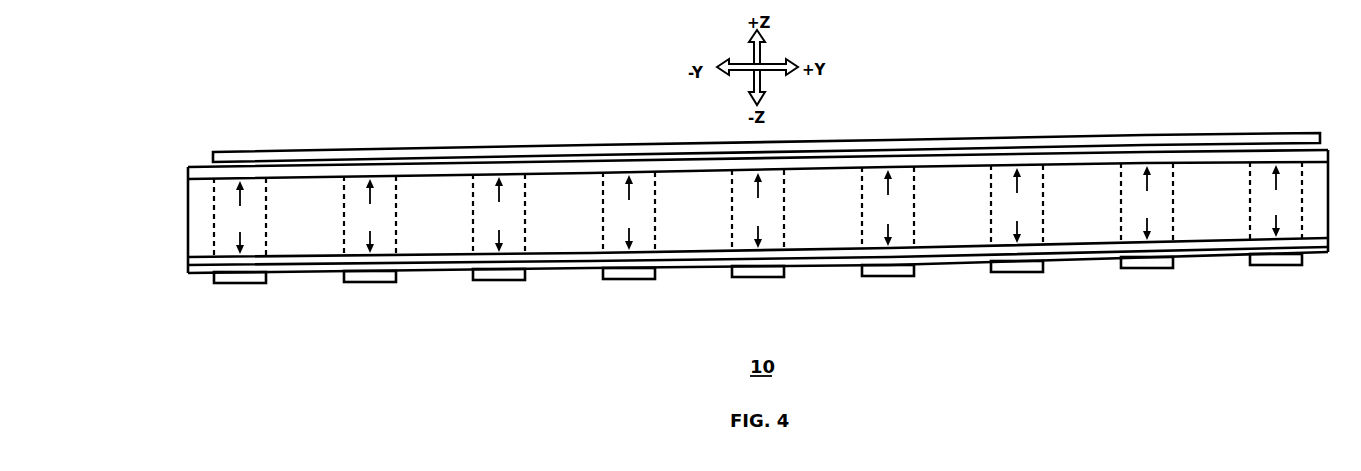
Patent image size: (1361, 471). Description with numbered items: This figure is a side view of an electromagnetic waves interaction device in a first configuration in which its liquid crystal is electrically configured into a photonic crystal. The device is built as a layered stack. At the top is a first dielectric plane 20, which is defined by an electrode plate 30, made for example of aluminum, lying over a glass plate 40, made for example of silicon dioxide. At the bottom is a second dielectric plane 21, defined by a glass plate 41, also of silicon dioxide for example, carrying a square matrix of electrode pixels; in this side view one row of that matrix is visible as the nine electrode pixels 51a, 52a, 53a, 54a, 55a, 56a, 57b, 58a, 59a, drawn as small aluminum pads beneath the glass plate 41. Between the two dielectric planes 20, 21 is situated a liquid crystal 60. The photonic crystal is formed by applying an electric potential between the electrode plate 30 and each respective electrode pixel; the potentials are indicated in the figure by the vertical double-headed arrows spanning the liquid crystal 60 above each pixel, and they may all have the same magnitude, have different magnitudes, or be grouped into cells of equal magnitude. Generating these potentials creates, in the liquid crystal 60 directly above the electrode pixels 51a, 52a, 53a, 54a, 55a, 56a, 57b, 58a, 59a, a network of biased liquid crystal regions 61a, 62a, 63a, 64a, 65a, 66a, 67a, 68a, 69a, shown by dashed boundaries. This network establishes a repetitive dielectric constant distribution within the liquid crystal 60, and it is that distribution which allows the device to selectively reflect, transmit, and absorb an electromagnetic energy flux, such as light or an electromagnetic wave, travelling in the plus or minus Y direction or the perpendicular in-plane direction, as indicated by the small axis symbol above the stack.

The first dielectric plane 20 is at (178, 157).
The second dielectric plane 21 is at (178, 270).
The electrode plate 30 is at (1293, 140).
The glass plate 40 is at (1320, 152).
The glass plate 41 is at (1323, 243).
The liquid crystal 60 is at (1322, 197).
The electrode pixel 51a is at (242, 277).
The electrode pixel 52a is at (372, 276).
The electrode pixel 53a is at (501, 274).
The electrode pixel 54a is at (631, 273).
The electrode pixel 55a is at (760, 271).
The electrode pixel 56a is at (890, 270).
The electrode pixel 57b is at (1019, 266).
The electrode pixel 58a is at (1149, 262).
The electrode pixel 59a is at (1278, 259).
The biased liquid crystal region 61a is at (263, 236).
The biased liquid crystal region 62a is at (393, 234).
The biased liquid crystal region 63a is at (522, 232).
The biased liquid crystal region 64a is at (652, 230).
The biased liquid crystal region 65a is at (781, 228).
The biased liquid crystal region 66a is at (911, 225).
The biased liquid crystal region 67a is at (1040, 223).
The biased liquid crystal region 68a is at (1170, 221).
The biased liquid crystal region 69a is at (1250, 227).